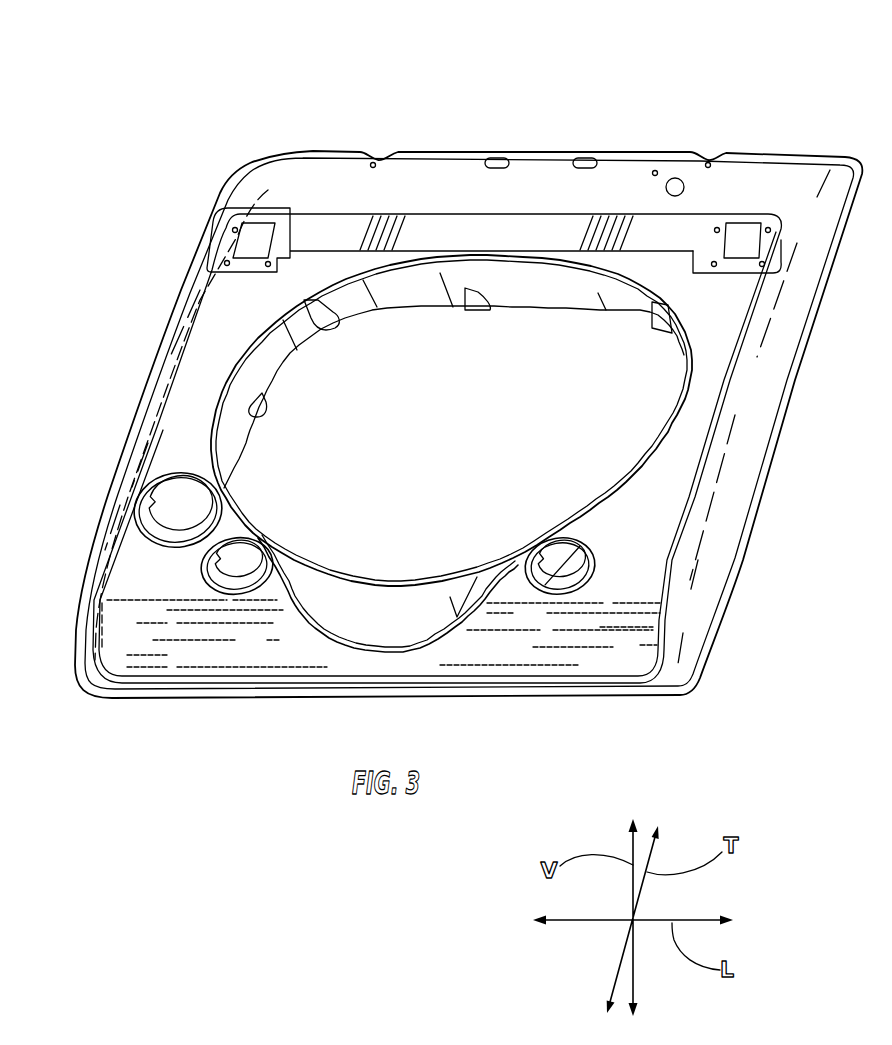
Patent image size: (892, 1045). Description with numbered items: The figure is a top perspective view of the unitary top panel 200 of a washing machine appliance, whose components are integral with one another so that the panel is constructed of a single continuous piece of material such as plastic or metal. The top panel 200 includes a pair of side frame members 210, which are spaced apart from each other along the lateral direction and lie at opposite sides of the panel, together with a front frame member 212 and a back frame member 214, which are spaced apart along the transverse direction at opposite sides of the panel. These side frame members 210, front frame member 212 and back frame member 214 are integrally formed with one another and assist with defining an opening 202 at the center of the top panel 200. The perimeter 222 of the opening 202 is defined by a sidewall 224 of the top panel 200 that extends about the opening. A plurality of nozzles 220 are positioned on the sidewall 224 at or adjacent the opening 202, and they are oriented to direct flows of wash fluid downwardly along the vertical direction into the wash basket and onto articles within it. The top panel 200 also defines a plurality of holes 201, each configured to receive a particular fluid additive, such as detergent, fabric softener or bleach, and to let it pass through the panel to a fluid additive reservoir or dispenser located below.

The top panel 200 is at (231, 112).
The plurality of holes 201 is at (230, 573).
The opening 202 is at (299, 399).
The side frame members 210 is at (205, 320).
The front frame member 212 is at (327, 688).
The back frame member 214 is at (530, 180).
The nozzles 220 is at (327, 330).
The perimeter 222 is at (232, 447).
The sidewall 224 is at (600, 292).